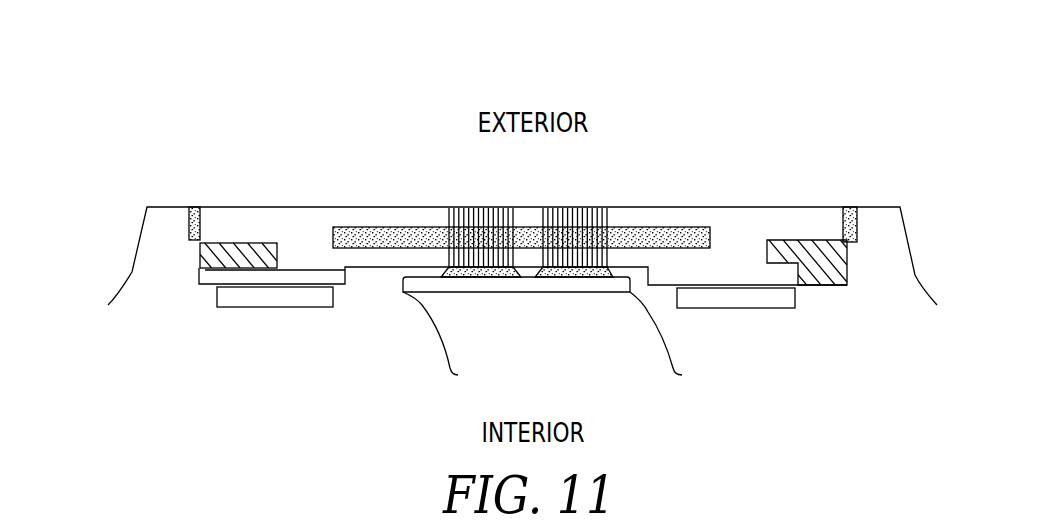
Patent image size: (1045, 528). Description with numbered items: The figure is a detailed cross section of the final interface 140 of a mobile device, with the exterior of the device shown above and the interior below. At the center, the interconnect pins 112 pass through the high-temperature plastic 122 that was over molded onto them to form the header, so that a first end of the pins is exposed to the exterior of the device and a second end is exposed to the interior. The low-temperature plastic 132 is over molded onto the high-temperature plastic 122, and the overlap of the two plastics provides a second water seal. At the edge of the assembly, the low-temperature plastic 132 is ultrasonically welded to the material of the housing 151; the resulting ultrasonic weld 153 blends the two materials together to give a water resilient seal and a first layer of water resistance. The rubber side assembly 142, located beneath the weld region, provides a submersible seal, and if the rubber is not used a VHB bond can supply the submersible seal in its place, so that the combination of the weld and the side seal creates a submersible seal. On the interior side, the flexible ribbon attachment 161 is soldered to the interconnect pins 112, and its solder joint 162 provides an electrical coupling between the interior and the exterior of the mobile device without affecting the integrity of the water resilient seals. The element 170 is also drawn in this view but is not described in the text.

The interface 140 is at (953, 70).
The housing 151 is at (164, 206).
The ultrasonic weld 153 is at (193, 207).
The rubber side assembly 142 is at (200, 272).
The high-temperature plastic 122 is at (375, 227).
The interconnect pins 112 is at (579, 208).
The solder joint 162 is at (472, 278).
The flexible ribbon attachment 161 is at (555, 292).
The circuit board 170 is at (275, 307).
The low-temperature plastic 132 is at (780, 207).